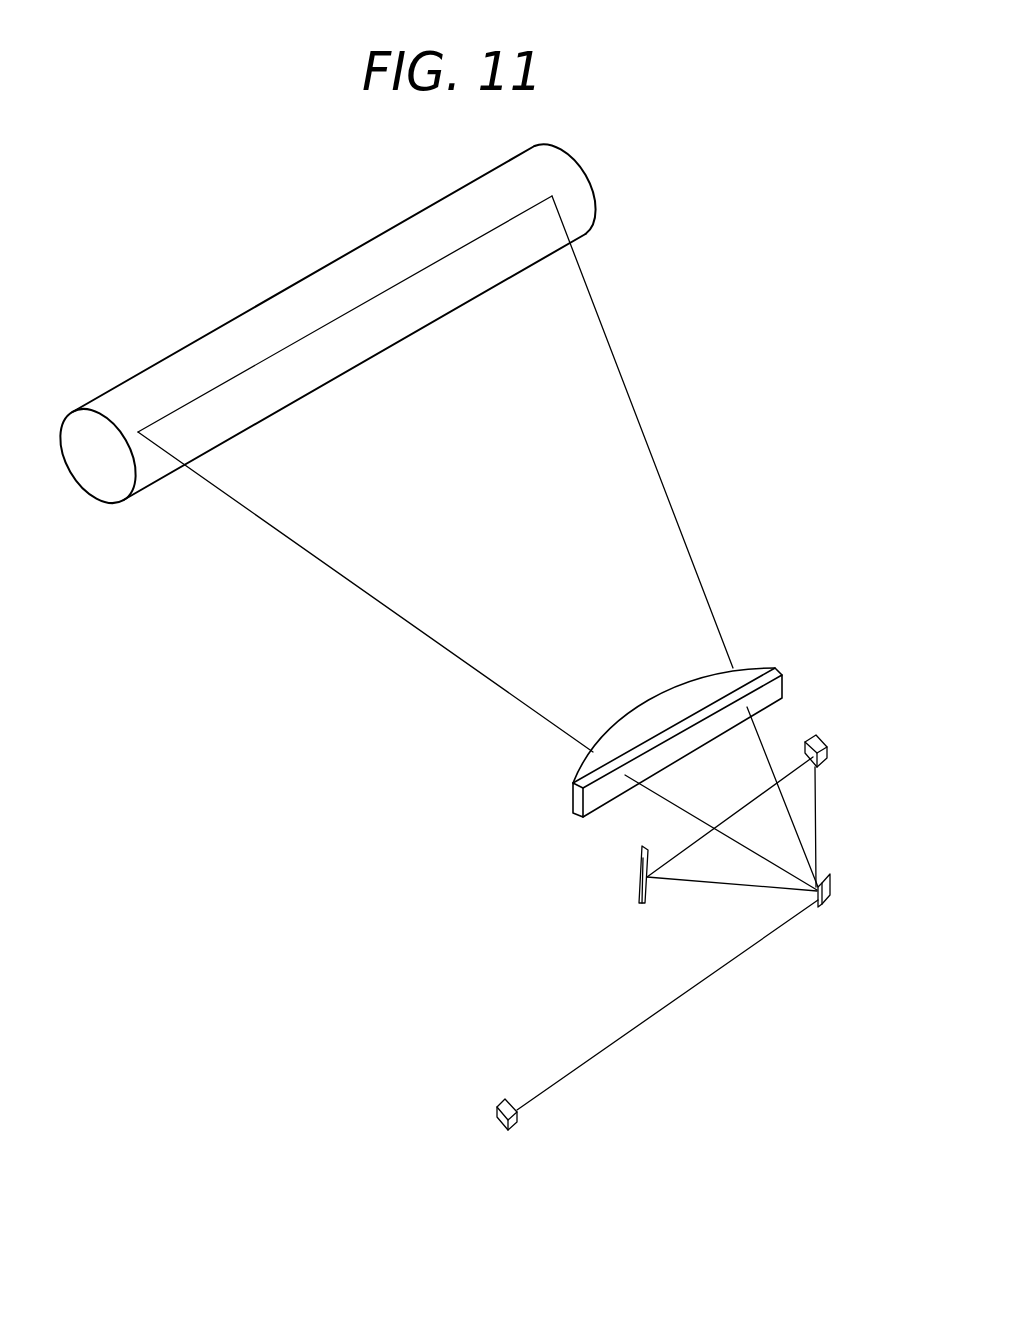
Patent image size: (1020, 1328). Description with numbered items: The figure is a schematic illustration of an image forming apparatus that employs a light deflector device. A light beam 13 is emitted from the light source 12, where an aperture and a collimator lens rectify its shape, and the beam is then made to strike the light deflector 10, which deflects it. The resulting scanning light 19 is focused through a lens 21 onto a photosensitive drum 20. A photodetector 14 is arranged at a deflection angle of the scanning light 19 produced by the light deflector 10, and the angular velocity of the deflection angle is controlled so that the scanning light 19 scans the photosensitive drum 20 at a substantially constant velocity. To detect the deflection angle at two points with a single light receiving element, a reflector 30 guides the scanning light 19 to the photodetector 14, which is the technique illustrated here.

The photosensitive drum 20 is at (590, 207).
The lens 21 is at (783, 681).
The scanning light 19 is at (670, 808).
The photodetector 14 is at (829, 751).
The reflector 30 is at (637, 889).
The light deflector 10 is at (831, 882).
The light beam 13 is at (647, 1020).
The light source 12 is at (512, 1130).